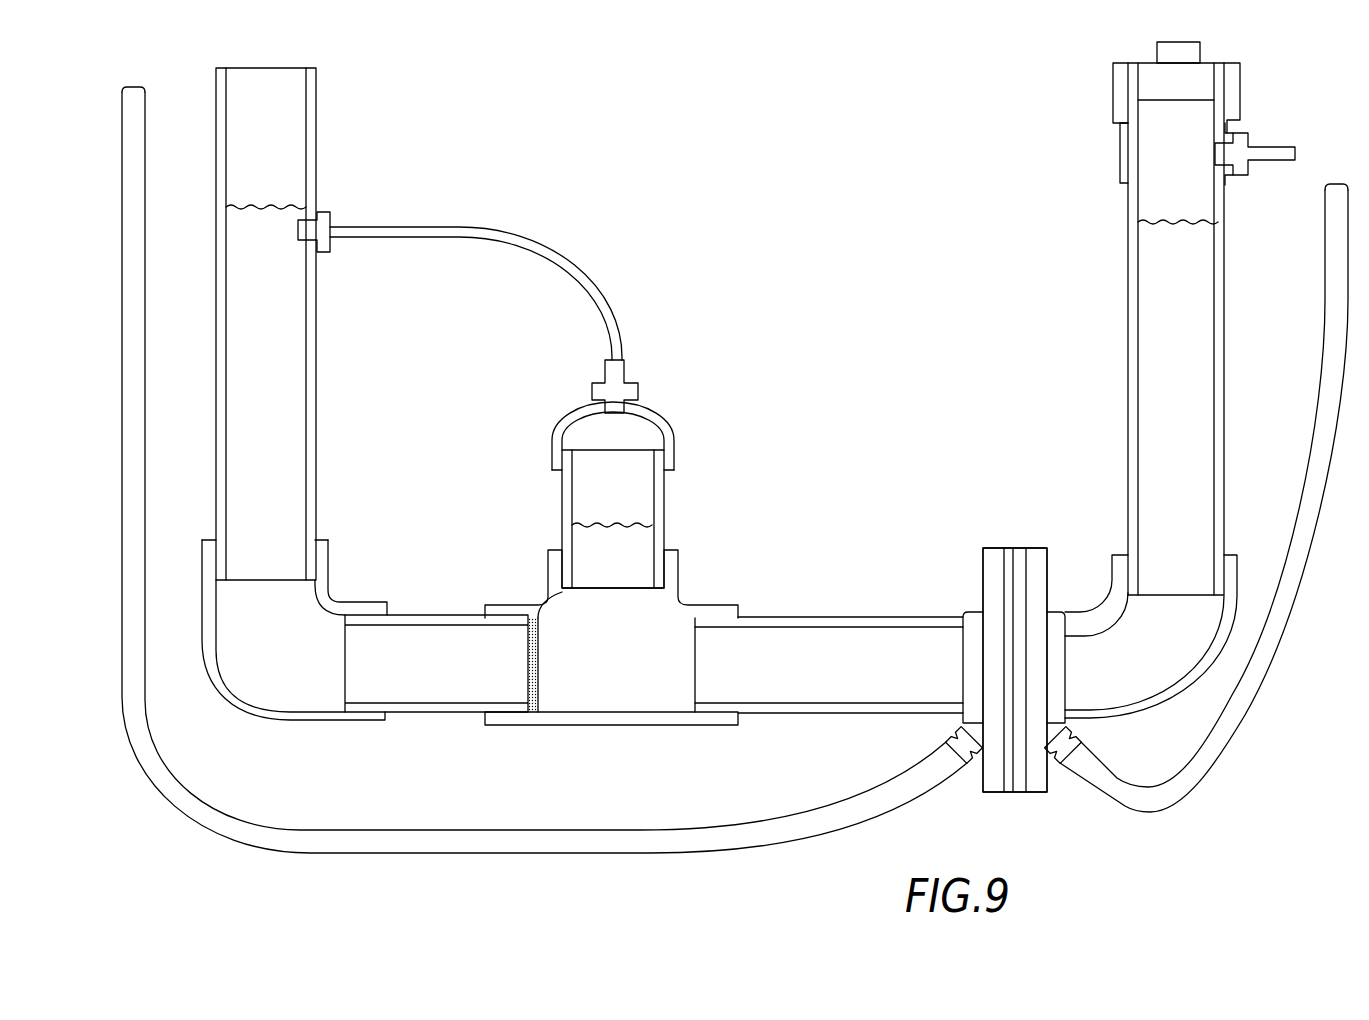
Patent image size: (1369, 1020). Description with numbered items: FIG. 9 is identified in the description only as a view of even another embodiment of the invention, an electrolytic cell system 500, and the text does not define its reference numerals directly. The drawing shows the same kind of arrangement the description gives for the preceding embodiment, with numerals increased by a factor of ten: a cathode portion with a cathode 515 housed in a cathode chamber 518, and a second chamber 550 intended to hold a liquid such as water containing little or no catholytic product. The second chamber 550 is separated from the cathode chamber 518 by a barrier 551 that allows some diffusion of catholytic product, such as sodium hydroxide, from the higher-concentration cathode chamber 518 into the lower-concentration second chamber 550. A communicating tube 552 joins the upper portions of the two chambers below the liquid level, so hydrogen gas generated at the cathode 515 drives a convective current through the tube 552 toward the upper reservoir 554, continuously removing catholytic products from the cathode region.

The fluid processing assembly 500 is at (818, 336).
The valve 515 is at (1010, 582).
The pipe 518 is at (806, 618).
The elbow fitting 550 is at (340, 600).
The gasket 551 is at (528, 637).
The tube 552 is at (515, 233).
The reservoir 554 is at (664, 511).